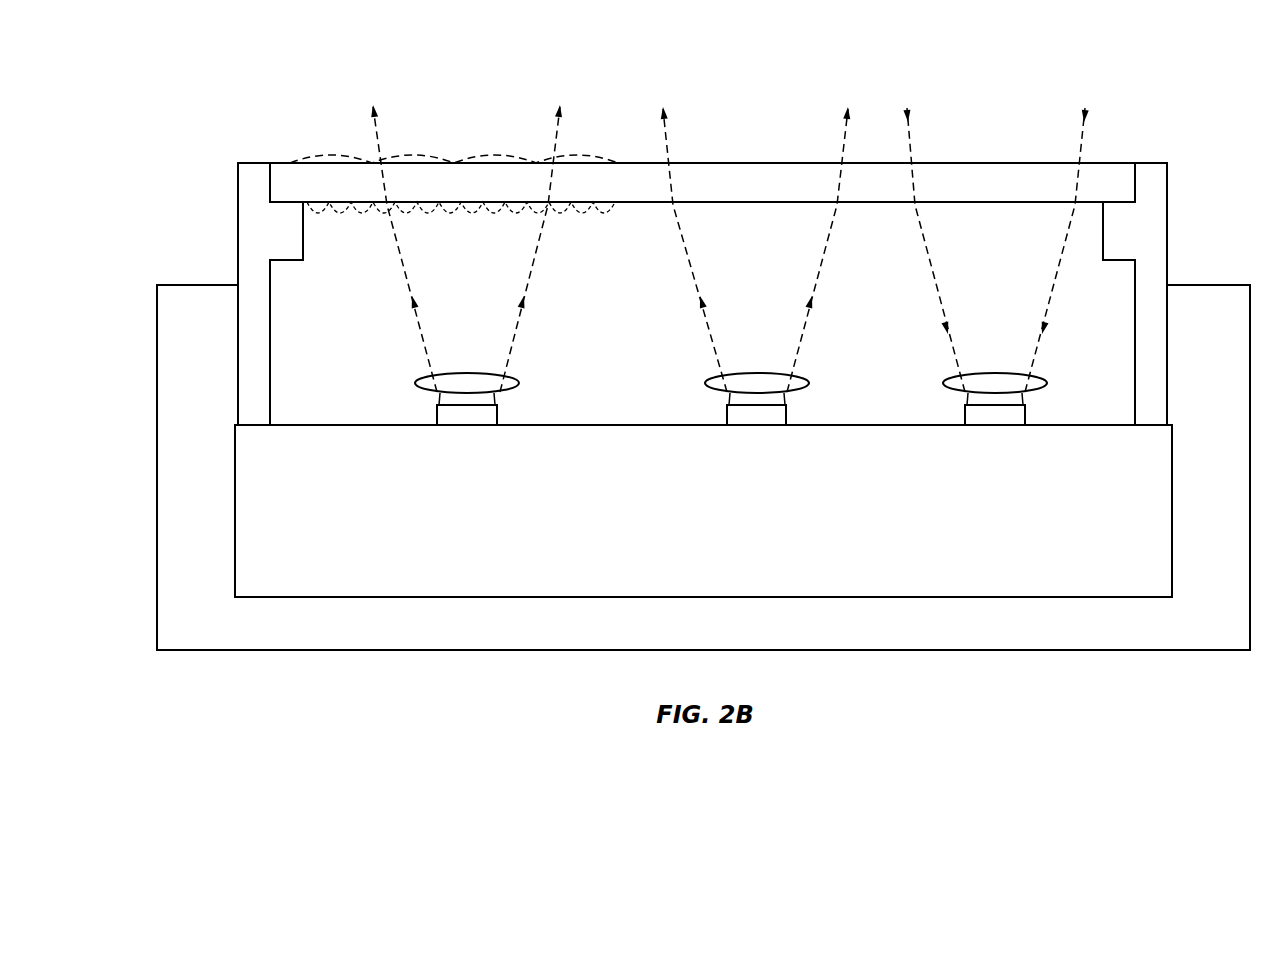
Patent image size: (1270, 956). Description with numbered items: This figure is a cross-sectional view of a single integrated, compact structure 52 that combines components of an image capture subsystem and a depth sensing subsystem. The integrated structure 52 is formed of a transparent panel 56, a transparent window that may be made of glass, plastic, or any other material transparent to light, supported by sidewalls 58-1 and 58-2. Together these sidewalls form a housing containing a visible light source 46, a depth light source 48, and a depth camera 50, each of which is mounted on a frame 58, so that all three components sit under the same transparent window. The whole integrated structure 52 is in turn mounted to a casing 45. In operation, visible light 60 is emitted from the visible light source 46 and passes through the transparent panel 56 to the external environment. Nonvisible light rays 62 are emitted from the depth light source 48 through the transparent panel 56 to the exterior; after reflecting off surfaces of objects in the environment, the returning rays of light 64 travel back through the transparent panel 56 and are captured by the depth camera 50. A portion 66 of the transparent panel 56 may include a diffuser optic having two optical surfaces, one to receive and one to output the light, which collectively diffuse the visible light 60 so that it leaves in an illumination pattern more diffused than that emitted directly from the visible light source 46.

The casing 45 is at (717, 639).
The frame 58 is at (717, 526).
The sidewall 58-1 is at (238, 193).
The sidewall 58-2 is at (1167, 190).
The transparent panel 56 is at (740, 163).
The portion of the transparent panel 66 is at (620, 82).
The visible light 60 is at (468, 372).
The nonvisible light rays 62 is at (758, 372).
The rays of light 64 is at (993, 372).
The visible light source 46 is at (467, 418).
The depth light source 48 is at (757, 418).
The depth camera 50 is at (995, 418).
The integrated structure 52 is at (1140, 68).